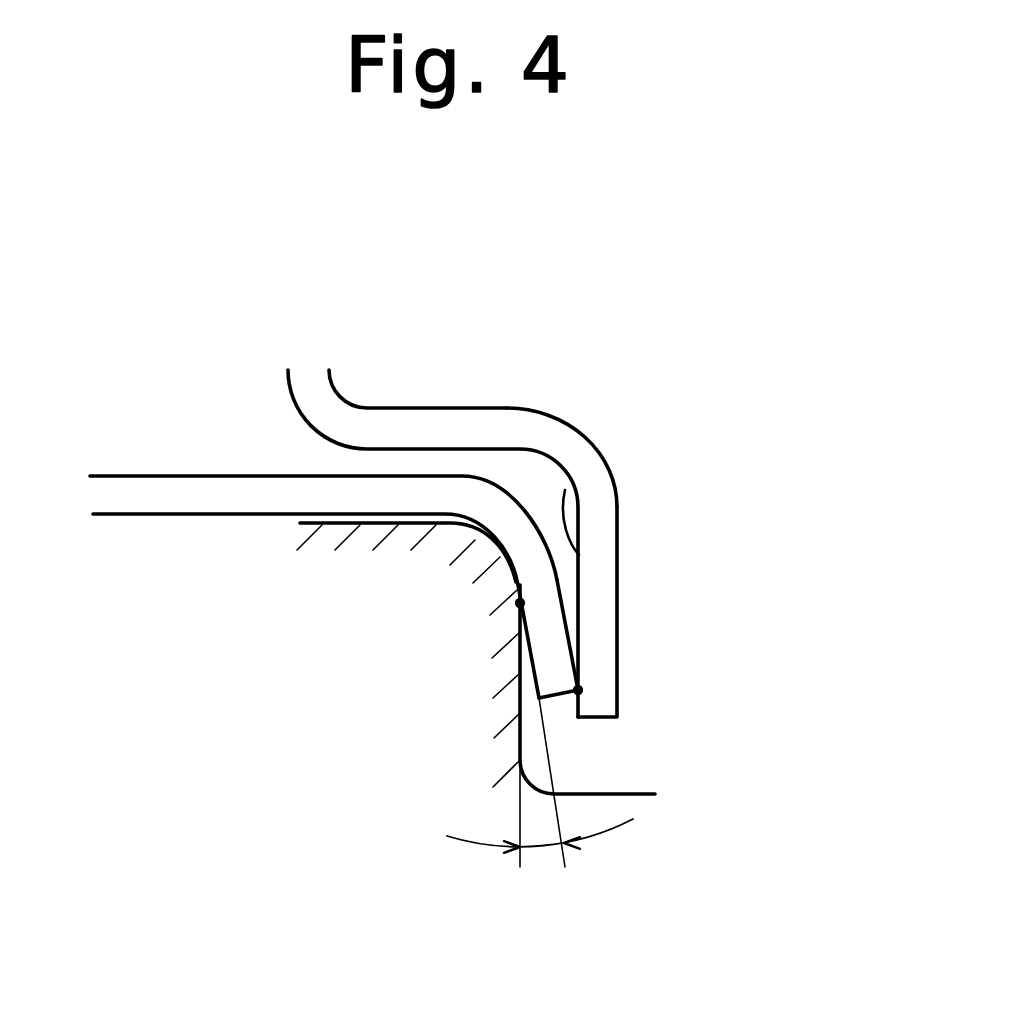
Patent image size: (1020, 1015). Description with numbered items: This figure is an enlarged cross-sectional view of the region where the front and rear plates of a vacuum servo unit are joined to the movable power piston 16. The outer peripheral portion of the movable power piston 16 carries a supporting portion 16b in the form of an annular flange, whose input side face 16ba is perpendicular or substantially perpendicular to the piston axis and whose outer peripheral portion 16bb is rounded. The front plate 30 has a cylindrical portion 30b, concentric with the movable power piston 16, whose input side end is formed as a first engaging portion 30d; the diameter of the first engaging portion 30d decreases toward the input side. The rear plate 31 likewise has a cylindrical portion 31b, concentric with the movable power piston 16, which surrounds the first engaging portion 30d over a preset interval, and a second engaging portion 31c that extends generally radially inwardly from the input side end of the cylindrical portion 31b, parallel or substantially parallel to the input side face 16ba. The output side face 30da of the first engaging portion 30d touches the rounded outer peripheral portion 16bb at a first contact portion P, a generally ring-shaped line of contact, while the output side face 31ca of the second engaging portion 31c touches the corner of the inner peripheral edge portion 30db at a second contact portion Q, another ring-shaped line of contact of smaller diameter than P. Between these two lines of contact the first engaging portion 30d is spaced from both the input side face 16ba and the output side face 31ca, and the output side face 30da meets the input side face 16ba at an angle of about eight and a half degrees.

The movable power piston 16 is at (573, 971).
The supporting portion 16b is at (415, 650).
The input side face 16ba is at (520, 727).
The outer peripheral portion 16bb is at (497, 552).
The front plate 30 is at (141, 514).
The cylindrical portion 30b is at (247, 487).
The first engaging portion 30d is at (550, 633).
The output side face 30da is at (537, 673).
The inner peripheral edge portion 30db is at (557, 700).
The rear plate 31 is at (366, 404).
The cylindrical portion 31b is at (485, 427).
The second engaging portion 31c is at (603, 542).
The output side face 31ca is at (565, 490).
The first contact portion P is at (526, 602).
The second contact portion Q is at (583, 690).